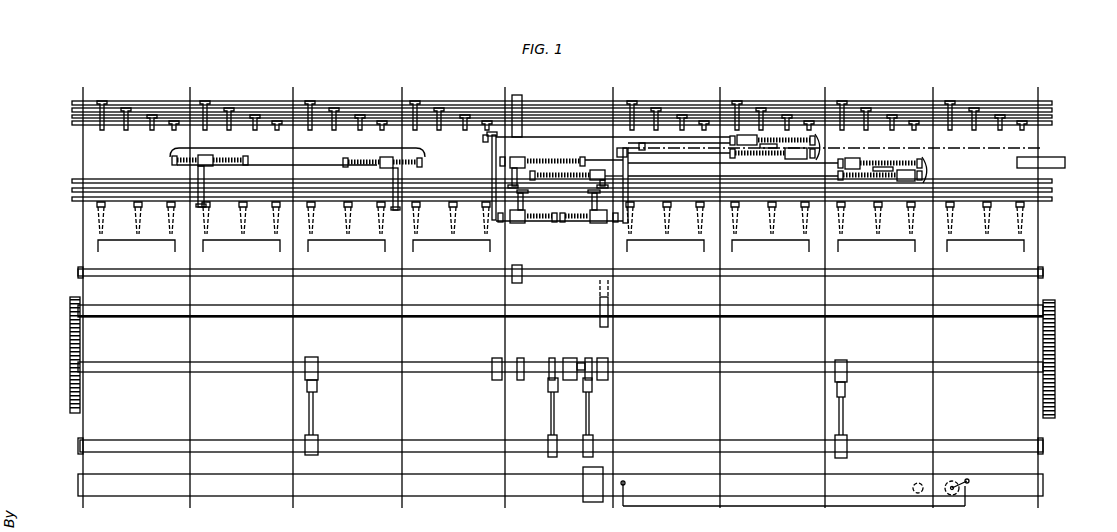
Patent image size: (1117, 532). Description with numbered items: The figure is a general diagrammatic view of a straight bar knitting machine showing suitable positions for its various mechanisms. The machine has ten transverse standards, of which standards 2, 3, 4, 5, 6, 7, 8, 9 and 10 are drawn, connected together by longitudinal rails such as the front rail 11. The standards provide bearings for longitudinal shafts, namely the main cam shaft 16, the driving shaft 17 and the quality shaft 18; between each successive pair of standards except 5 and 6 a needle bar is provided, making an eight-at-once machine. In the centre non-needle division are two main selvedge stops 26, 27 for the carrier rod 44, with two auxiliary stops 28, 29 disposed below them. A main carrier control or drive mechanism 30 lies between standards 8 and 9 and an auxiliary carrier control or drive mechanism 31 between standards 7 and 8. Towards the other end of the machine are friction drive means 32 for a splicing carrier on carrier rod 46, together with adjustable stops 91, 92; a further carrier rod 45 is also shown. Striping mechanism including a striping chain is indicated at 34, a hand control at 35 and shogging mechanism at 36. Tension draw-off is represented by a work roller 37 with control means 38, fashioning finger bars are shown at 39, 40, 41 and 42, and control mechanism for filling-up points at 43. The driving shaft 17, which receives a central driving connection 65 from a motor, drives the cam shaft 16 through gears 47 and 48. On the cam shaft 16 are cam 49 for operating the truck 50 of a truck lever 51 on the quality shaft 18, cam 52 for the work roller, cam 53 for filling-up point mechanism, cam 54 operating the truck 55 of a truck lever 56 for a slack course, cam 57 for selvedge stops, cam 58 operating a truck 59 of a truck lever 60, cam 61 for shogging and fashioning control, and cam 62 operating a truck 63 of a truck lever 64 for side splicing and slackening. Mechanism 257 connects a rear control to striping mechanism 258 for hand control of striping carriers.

The transverse standard 2 is at (189, 286).
The transverse standard 3 is at (293, 286).
The transverse standard 4 is at (400, 286).
The transverse standard 5 is at (505, 286).
The transverse standard 6 is at (612, 286).
The transverse standard 7 is at (719, 286).
The transverse standard 8 is at (824, 286).
The transverse standard 9 is at (932, 286).
The transverse standard 10 is at (1038, 286).
The front rail 11 is at (120, 484).
The main cam shaft 16 is at (121, 361).
The driving shaft 17 is at (247, 318).
The quality shaft 18 is at (368, 442).
The main selvedge stop 26 is at (516, 159).
The main selvedge stop 27 is at (600, 170).
The auxiliary stop 28 is at (522, 223).
The auxiliary stop 29 is at (600, 223).
The main carrier control or drive mechanism 30 is at (926, 170).
The auxiliary carrier control or drive mechanism 31 is at (820, 148).
The friction drive means 32 is at (298, 148).
The striping mechanism 34 is at (920, 507).
The hand control 35 is at (630, 506).
The shogging mechanism 36 is at (601, 503).
The work roller 37 is at (896, 277).
The control means 38 is at (522, 280).
The fashioning finger bar 39 is at (220, 101).
The fashioning finger bar 40 is at (333, 108).
The fashioning finger bar 41 is at (256, 115).
The fashioning finger bar 42 is at (380, 121).
The control mechanism for filling-up points 43 is at (522, 97).
The carrier rod 44 is at (435, 181).
The carrier rod 45 is at (472, 190).
The carrier rod 46 is at (480, 202).
The gear 47 is at (70, 326).
The gear 48 is at (1055, 325).
The cam 49 is at (316, 358).
The truck 50 is at (320, 387).
The truck lever 51 is at (318, 404).
The cam 52 is at (496, 361).
The cam 53 is at (520, 358).
The cam 54 is at (550, 361).
The truck 55 is at (548, 386).
The truck lever 56 is at (551, 410).
The cam 57 is at (575, 358).
The cam 58 is at (589, 358).
The truck 59 is at (585, 390).
The truck lever 60 is at (593, 398).
The cam 61 is at (608, 361).
The cam 62 is at (844, 360).
The truck 63 is at (848, 388).
The truck lever 64 is at (844, 399).
The central driving connection 65 is at (608, 297).
The adjustable stop 91 is at (210, 168).
The adjustable stop 92 is at (395, 165).
The connecting mechanism 257 is at (737, 110).
The striping mechanism 258 is at (1065, 163).